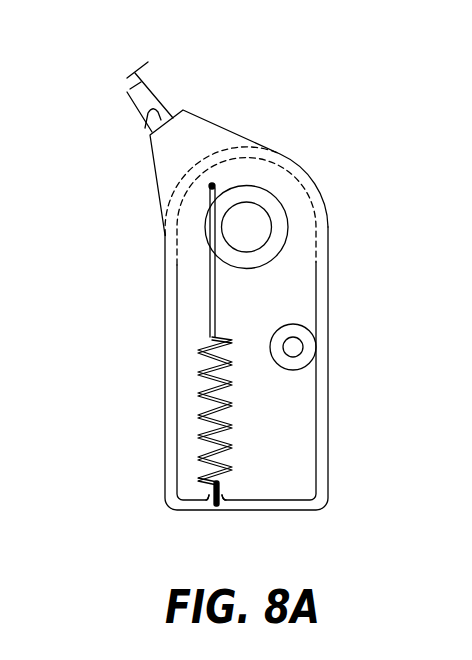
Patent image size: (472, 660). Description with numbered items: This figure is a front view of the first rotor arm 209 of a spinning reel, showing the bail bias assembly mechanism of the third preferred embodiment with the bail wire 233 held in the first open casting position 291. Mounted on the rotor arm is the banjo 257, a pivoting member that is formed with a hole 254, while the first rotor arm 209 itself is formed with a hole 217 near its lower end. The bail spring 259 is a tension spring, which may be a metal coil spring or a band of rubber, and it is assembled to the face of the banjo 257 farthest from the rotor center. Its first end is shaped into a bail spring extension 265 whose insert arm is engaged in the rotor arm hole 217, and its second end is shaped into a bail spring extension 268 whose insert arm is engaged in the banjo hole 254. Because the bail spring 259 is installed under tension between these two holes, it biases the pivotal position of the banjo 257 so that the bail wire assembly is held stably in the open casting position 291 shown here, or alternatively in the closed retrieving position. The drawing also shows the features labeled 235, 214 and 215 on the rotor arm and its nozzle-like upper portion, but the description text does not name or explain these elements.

The first rotor arm 209 is at (374, 55).
The first open casting position 291 is at (128, 74).
The banjo 257 is at (196, 130).
The hole 254 is at (214, 184).
The bail wire 233 is at (140, 97).
The tab 235 is at (150, 133).
The bail spring extension 268 is at (210, 279).
The axle boss 214 is at (304, 343).
The housing body 215 is at (300, 418).
The bail spring 259 is at (203, 427).
The bail spring extension 265 is at (212, 501).
The hole 217 is at (217, 507).